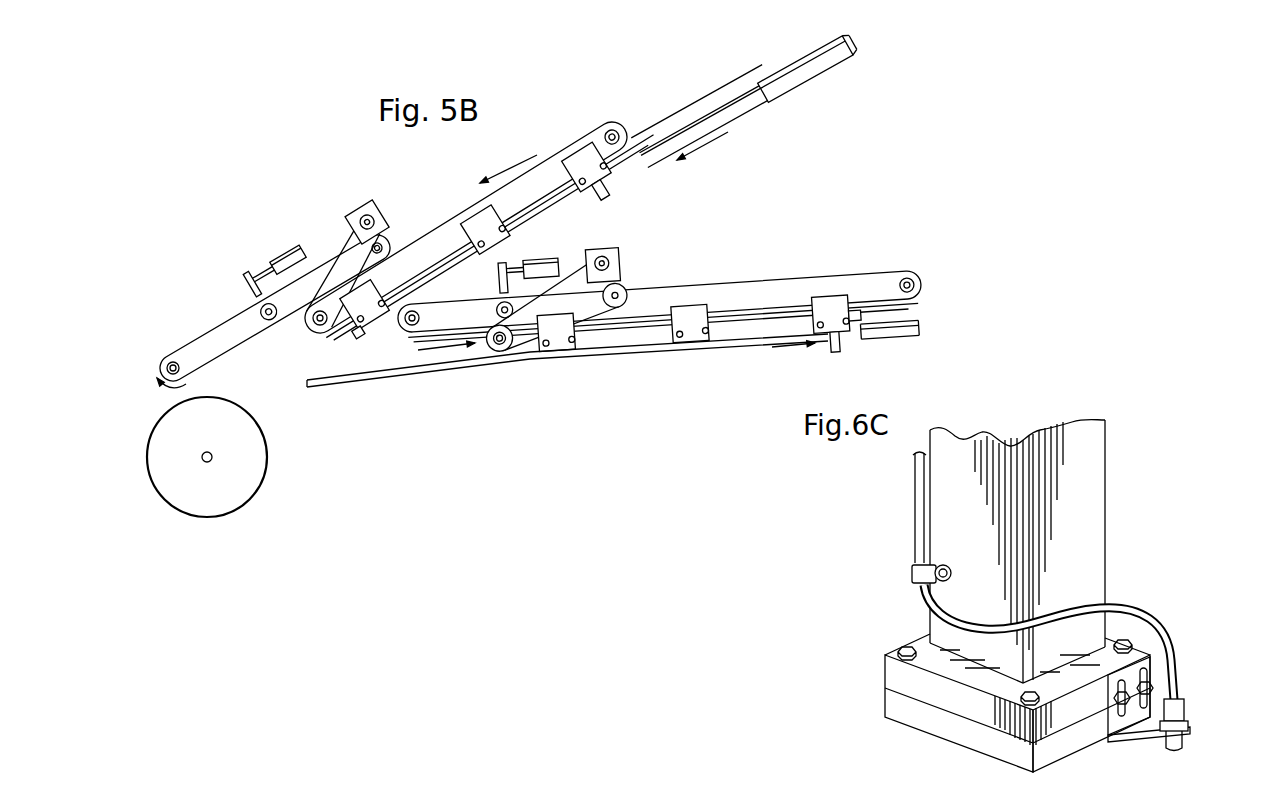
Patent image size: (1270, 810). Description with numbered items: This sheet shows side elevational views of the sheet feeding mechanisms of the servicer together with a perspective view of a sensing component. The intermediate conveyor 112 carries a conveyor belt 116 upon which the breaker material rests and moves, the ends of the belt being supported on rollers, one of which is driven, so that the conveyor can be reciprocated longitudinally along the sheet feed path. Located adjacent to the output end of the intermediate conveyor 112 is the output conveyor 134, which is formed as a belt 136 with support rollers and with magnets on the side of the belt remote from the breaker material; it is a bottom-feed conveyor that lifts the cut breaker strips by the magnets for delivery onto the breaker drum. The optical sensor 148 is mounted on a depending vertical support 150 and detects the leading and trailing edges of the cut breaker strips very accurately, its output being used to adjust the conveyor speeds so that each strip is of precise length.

In FIG. 5B, the intermediate conveyor 112 is at (545, 155).
In FIG. 5B, the conveyor belt 116 is at (573, 148).
In FIG. 5B, the output conveyor 134 is at (240, 302).
In FIG. 5B, the belt 136 is at (190, 338).
In FIG. 6C, the depending vertical support 150 is at (1093, 478).
In FIG. 6C, the optical sensor 148 is at (1185, 743).